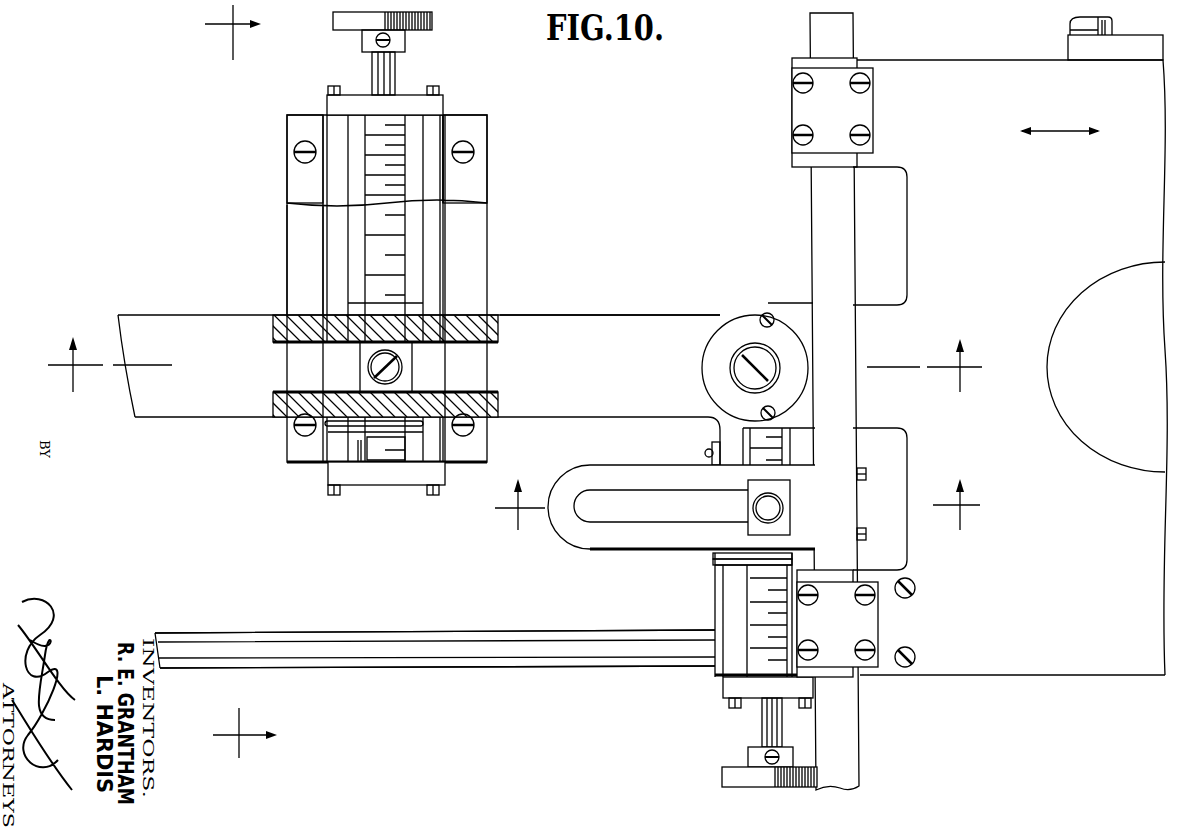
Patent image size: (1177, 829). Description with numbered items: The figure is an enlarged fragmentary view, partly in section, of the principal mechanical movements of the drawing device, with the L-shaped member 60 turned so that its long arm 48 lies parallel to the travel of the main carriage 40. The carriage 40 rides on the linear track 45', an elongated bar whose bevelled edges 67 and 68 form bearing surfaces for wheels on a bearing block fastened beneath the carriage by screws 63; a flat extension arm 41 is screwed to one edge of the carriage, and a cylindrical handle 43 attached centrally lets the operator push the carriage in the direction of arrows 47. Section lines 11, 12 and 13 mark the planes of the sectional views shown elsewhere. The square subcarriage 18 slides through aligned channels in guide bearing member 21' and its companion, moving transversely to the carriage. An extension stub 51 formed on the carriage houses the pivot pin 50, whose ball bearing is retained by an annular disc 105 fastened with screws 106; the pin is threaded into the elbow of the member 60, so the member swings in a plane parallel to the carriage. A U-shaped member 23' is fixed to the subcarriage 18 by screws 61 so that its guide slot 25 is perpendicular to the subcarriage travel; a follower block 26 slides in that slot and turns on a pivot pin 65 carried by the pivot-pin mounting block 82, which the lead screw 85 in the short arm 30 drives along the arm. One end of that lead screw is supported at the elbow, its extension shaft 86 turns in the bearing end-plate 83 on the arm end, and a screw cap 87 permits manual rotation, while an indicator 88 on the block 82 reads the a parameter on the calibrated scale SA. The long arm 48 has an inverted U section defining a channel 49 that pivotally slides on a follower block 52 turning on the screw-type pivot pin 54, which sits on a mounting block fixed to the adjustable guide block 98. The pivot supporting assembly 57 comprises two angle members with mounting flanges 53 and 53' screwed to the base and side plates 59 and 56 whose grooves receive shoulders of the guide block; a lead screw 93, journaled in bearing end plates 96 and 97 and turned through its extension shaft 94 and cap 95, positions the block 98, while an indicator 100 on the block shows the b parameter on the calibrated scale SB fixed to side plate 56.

The cap 95 is at (433, 21).
The extension shaft 94 is at (372, 69).
The bearing end plate 96 is at (405, 95).
The lead screw 93 is at (405, 130).
The side plate 56 is at (300, 128).
The pivot supporting assembly 57 is at (493, 156).
The side plate 59 is at (445, 177).
The mounting flange 53' is at (286, 260).
The mounting flange 53 is at (408, 288).
The calibrated scale SB is at (322, 272).
The L-shaped member 60 is at (619, 311).
The annular disc 105 is at (740, 325).
The screws 106 is at (766, 313).
The pivot pin 50 is at (783, 361).
The follower block 52 is at (415, 360).
The screw-type pivot pin 54 is at (397, 373).
The channel 49 is at (500, 393).
The long arm 48 is at (234, 401).
The indicator 100 is at (330, 424).
The adjustable guide block 98 is at (360, 452).
The bearing end plate 97 is at (406, 481).
The section line 12- 12 is at (515, 374).
The section line 13- 13 is at (737, 515).
The section line 11- 11 is at (233, 381).
The cylindrical handle 43 is at (1135, 400).
The arrows 47 is at (1058, 131).
The extension stub 51 is at (877, 301).
The flat extension arm 41 is at (1084, 13).
The screws 61 is at (866, 534).
The screws 63 is at (913, 585).
The pivot pin 65 is at (760, 505).
The follower block 26 is at (749, 529).
The U-shaped member 23' is at (671, 518).
The guide slot 25 is at (626, 520).
The indicator 88 is at (742, 557).
The pivot-pin mounting block 82 is at (746, 563).
The calibrated scale SA is at (713, 610).
The short arm 30 is at (742, 672).
The lead screw 85 is at (755, 667).
The bearing end-plate 83 is at (724, 692).
The extension shaft 86 is at (762, 721).
The screw cap 87 is at (733, 772).
The subcarriage 18 is at (853, 742).
The guide bearing member 21' is at (861, 623).
The main carriage 40 is at (1080, 676).
The linear track 45' is at (435, 629).
The bevelled edge 67 is at (456, 638).
The bevelled edge 68 is at (520, 666).